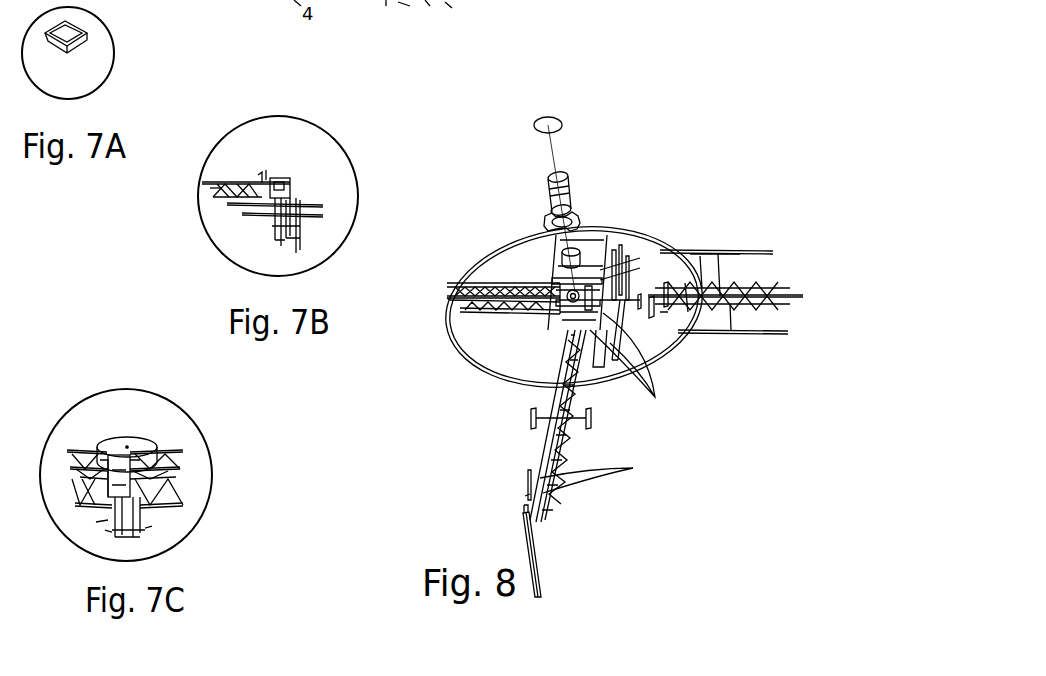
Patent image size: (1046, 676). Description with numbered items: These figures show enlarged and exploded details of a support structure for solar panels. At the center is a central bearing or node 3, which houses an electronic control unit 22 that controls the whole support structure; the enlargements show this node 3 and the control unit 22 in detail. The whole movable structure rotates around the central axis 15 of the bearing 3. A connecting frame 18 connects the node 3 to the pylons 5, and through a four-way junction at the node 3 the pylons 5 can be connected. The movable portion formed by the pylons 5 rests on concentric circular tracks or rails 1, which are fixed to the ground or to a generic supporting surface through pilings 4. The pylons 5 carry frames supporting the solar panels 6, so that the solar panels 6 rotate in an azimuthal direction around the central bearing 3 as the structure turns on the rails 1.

In FIG. 8, the concentric tracks or rails 1 is at (668, 234).
In FIG. 7C, the central bearing or node 3 is at (141, 425).
In FIG. 8, the central bearing or node 3 is at (588, 226).
In FIG. 8, the pilings 4 is at (550, 577).
In FIG. 8, the pylons 5 is at (545, 525).
In FIG. 8, the solar panels 6 is at (600, 403).
In FIG. 8, the central axis 15 is at (542, 152).
In FIG. 8, the connecting frame 18 is at (500, 283).
In FIG. 7A, the electronic control unit 22 is at (78, 56).
In FIG. 7B, the electronic control unit 22 is at (282, 177).
In FIG. 8, the electronic control unit 22 is at (622, 278).